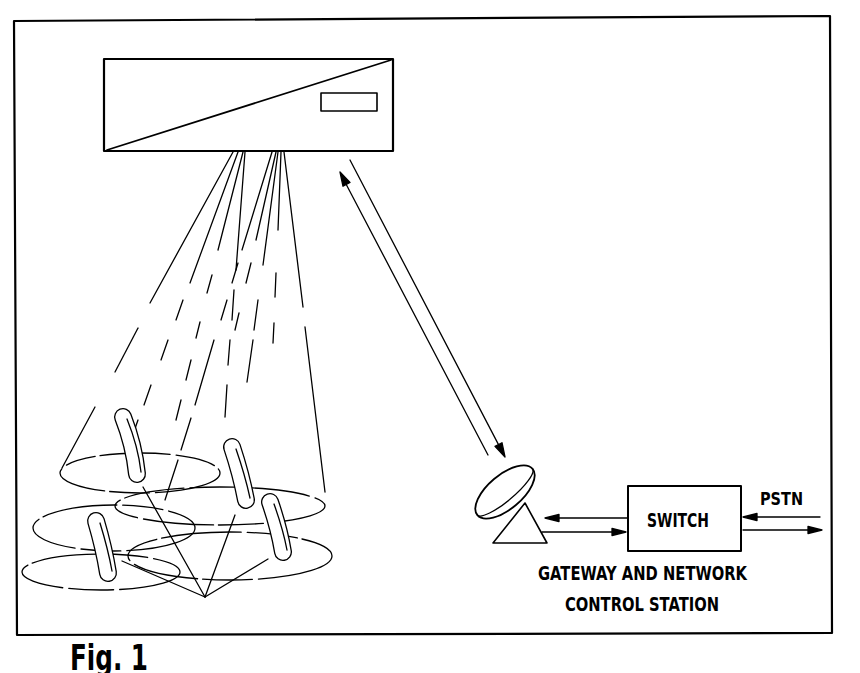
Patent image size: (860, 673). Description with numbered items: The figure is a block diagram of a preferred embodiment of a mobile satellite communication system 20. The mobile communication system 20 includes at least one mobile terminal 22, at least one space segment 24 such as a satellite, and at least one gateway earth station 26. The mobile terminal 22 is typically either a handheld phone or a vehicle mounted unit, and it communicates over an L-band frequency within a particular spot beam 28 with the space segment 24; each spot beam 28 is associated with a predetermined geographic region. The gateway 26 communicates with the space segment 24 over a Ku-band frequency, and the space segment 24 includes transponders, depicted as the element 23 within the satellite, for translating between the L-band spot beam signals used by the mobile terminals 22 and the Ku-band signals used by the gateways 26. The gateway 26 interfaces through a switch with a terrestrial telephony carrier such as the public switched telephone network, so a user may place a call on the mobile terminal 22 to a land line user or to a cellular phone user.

The mobile satellite communication system 20 is at (426, 634).
The mobile terminal 22 is at (98, 572).
The satellite payload / transponder 23 is at (377, 101).
The space segment 24 is at (390, 61).
The gateway earth station 26 is at (478, 518).
The spot beam 28 is at (305, 331).